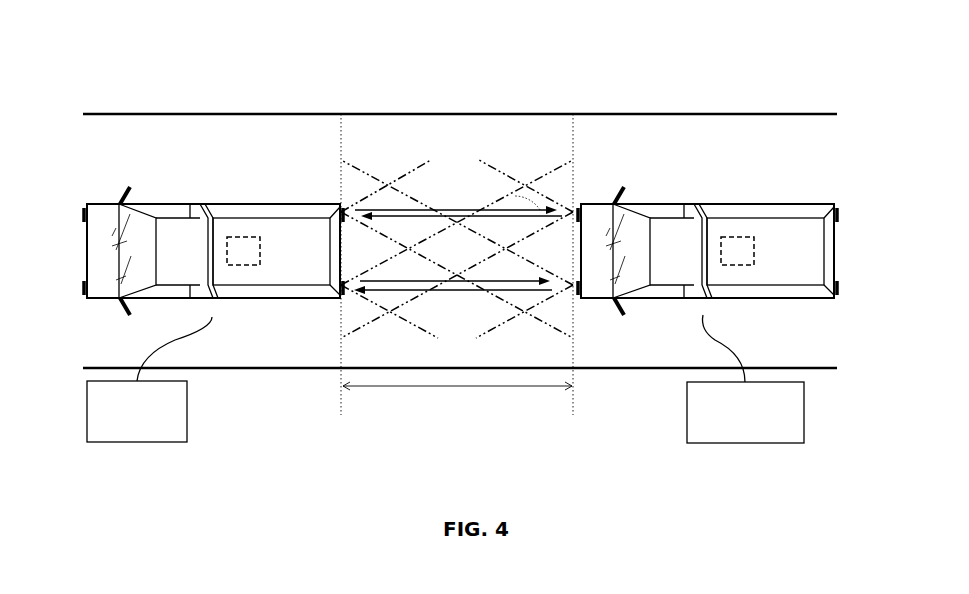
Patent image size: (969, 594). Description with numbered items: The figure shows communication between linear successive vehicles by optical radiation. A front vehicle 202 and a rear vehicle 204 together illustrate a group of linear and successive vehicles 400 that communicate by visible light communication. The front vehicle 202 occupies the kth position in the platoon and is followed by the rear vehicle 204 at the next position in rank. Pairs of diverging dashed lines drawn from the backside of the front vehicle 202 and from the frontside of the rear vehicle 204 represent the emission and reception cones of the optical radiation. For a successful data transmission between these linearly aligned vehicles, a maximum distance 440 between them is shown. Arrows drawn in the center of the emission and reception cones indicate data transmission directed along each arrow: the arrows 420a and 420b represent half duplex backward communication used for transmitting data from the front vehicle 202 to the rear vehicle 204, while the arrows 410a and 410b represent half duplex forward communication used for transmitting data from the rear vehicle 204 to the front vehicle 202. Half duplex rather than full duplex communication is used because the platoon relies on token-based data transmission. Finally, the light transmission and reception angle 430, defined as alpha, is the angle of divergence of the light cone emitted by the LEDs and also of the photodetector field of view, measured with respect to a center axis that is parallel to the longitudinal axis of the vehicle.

The group of linear and successive vehicles 400 is at (446, 58).
The front vehicle 202 is at (210, 180).
The rear vehicle 204 is at (667, 183).
The arrow indicating half duplex backward communication 420a is at (441, 207).
The arrow indicating half duplex forward communication 410a is at (450, 208).
The arrow indicating half duplex backward communication 420b is at (428, 283).
The arrow indicating half duplex forward communication 410b is at (452, 292).
The light transmission and reception angle 430 is at (508, 200).
The maximum distance between the vehicles 440 is at (458, 387).